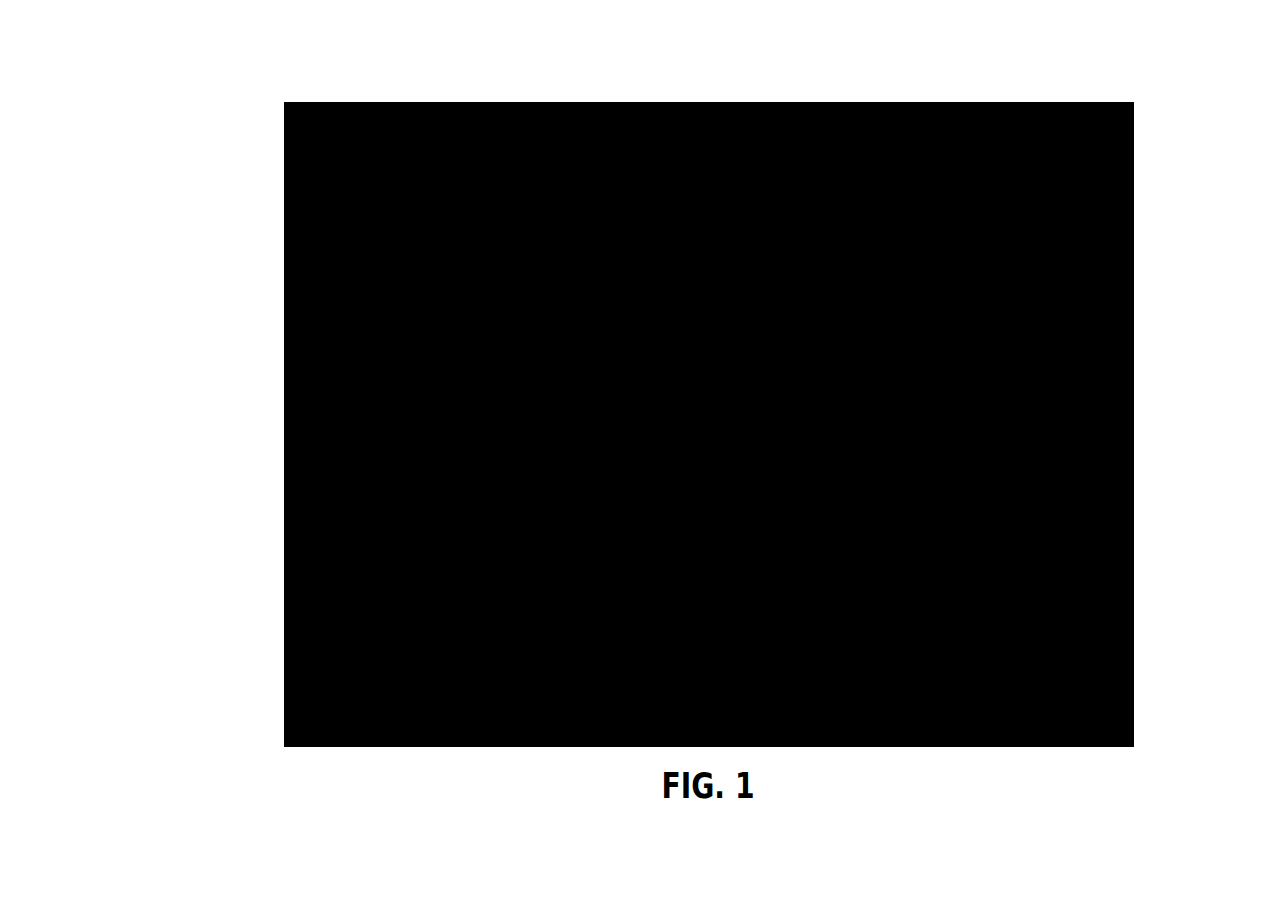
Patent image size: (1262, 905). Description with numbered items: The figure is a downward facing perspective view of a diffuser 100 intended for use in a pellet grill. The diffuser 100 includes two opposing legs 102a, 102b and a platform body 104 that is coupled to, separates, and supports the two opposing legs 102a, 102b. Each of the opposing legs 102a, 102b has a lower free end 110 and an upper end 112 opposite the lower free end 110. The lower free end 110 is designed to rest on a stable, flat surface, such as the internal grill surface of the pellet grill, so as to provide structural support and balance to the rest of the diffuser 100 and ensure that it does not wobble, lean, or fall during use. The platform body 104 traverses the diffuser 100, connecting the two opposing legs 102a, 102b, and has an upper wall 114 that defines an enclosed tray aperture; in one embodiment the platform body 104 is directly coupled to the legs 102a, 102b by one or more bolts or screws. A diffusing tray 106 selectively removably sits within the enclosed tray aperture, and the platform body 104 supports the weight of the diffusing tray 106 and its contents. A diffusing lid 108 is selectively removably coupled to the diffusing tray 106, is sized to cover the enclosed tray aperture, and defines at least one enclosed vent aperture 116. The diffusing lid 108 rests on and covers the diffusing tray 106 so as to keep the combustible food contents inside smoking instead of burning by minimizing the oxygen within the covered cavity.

The diffuser 100 is at (258, 218).
The opposing leg 102a is at (338, 518).
The opposing leg 102b is at (1067, 410).
The platform body 104 is at (285, 315).
The diffusing tray 106 is at (950, 275).
The diffusing lid 108 is at (697, 103).
The lower free end 110 is at (640, 693).
The upper end 112 is at (505, 405).
The upper wall 114 is at (430, 362).
The enclosed vent aperture 116 is at (703, 291).